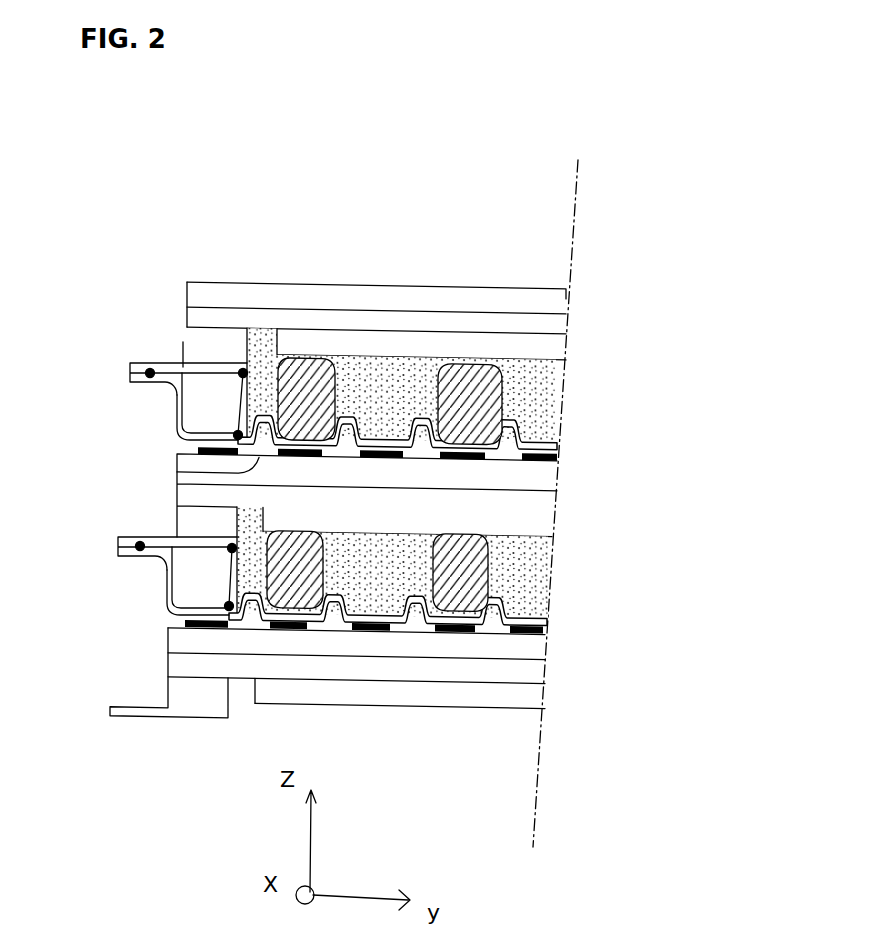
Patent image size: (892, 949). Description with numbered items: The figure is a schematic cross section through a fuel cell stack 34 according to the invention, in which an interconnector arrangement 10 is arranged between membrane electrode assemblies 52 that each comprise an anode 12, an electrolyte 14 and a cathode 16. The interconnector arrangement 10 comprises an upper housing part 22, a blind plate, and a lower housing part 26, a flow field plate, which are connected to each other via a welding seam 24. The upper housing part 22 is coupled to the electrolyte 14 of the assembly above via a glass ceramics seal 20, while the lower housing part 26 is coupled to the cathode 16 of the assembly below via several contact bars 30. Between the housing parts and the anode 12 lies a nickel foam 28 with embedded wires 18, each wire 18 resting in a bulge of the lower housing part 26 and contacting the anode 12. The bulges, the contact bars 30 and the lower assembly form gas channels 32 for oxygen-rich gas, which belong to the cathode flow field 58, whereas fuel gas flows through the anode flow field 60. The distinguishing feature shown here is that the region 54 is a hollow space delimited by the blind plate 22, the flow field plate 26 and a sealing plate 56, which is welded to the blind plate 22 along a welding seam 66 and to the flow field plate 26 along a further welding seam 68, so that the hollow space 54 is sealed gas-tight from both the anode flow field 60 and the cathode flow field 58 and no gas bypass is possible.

The interconnector arrangement 10 is at (425, 403).
The anode 12 is at (421, 345).
The electrolyte 14 is at (553, 330).
The cathode 16 is at (552, 307).
The wire 18 is at (303, 383).
The glass ceramics seal 20 is at (216, 338).
The upper housing part 22 is at (170, 363).
The welding seam 24 is at (150, 373).
The lower housing part 26 is at (199, 578).
The nickel foam 28 is at (543, 441).
The contact bar 30 is at (200, 450).
The gas channel 32 is at (177, 483).
The fuel cell stack 34 is at (158, 820).
The membrane electrode assembly 52 is at (419, 483).
The hollow space 54 is at (151, 494).
The sealing plate 56 is at (240, 420).
The cathode flow field 58 is at (422, 454).
The anode flow field 60 is at (380, 409).
The welding seam 66 is at (243, 372).
The welding seam 68 is at (257, 449).